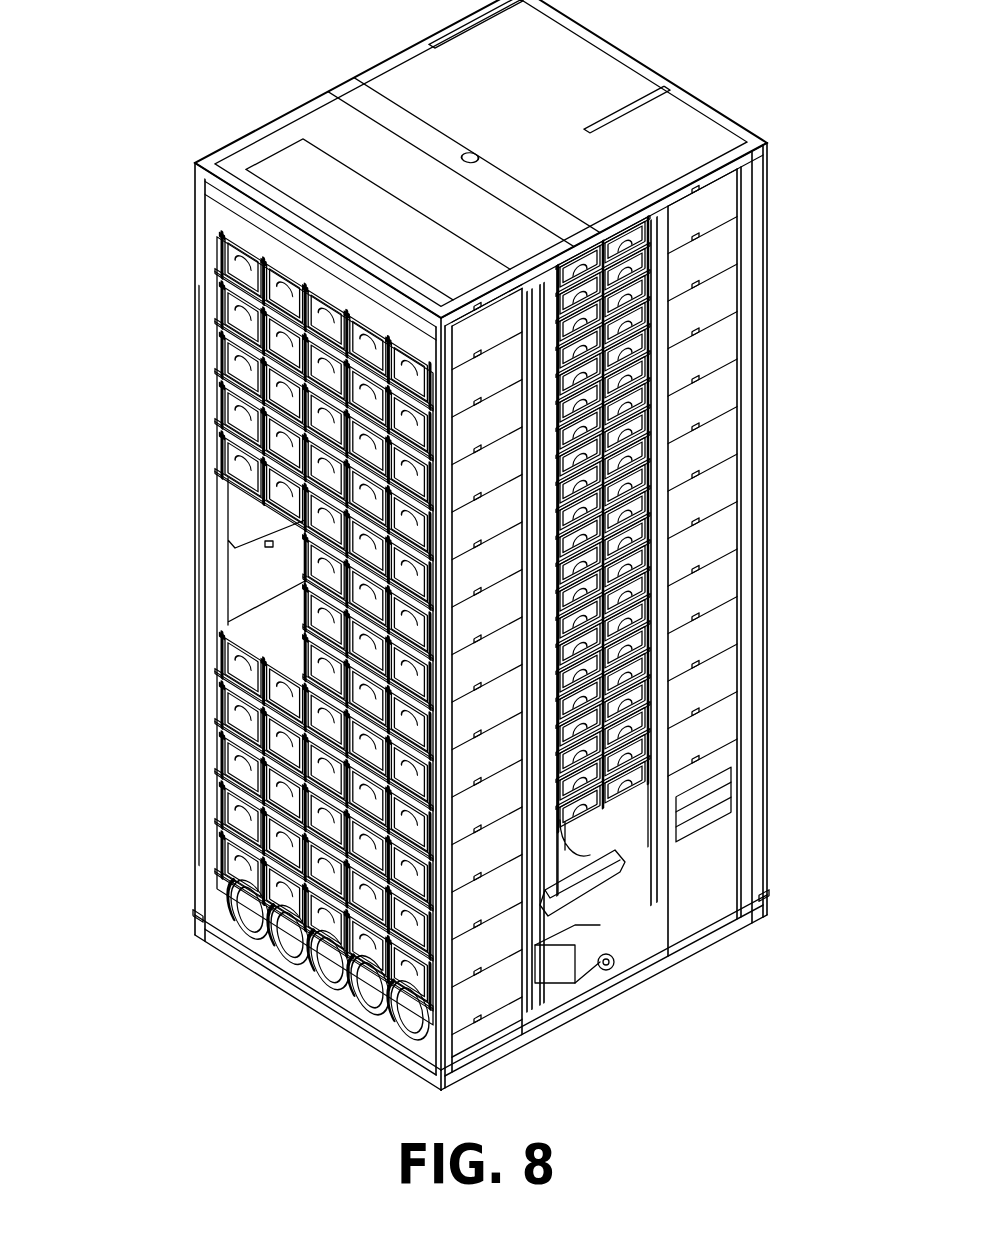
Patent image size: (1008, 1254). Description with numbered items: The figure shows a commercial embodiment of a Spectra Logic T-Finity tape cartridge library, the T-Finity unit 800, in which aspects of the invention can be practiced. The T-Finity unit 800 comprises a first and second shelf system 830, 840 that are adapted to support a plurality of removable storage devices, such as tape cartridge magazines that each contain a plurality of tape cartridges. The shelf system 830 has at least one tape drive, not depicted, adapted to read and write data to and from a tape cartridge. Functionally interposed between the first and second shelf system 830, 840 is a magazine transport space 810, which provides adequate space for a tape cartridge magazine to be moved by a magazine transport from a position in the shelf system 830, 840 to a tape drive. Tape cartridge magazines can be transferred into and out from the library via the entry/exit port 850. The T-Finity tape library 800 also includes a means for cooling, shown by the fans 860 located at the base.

The T-Finity unit 800 is at (240, 76).
The magazine transport space 810 is at (622, 935).
The first shelf system 830 is at (165, 698).
The second shelf system 840 is at (795, 557).
The entry/exit port 850 is at (250, 580).
The fans 860 is at (245, 968).